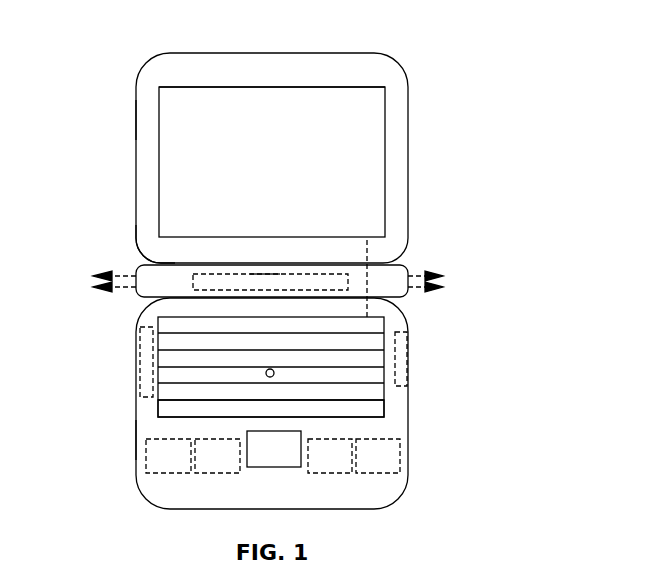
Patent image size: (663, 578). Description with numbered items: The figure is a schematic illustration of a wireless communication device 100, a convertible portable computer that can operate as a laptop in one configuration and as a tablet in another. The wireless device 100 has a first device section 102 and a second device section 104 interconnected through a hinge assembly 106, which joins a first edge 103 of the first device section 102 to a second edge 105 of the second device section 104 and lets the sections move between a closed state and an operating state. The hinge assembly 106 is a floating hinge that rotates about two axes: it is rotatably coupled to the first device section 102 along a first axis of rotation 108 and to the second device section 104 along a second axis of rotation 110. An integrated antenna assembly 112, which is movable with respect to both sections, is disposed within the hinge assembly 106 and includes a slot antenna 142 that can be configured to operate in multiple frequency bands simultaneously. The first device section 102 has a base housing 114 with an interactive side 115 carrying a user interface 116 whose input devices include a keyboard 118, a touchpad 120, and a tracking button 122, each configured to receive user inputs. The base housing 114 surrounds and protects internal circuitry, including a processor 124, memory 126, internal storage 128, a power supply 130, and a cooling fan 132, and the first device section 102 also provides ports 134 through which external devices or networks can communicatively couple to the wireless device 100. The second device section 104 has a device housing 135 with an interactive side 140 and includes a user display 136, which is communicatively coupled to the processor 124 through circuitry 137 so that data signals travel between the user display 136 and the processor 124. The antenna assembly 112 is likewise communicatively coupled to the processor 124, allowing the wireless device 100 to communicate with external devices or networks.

The wireless communication device 100 is at (465, 66).
The first device section 102 is at (417, 298).
The first edge 103 is at (178, 298).
The second device section 104 is at (417, 55).
The second edge 105 is at (162, 262).
The hinge assembly 106 is at (446, 266).
The first axis of rotation 108 is at (126, 292).
The second axis of rotation 110 is at (126, 270).
The antenna assembly 112 is at (262, 274).
The base housing 114 is at (137, 438).
The interactive side 115 is at (345, 343).
The user interface 116 is at (368, 355).
The keyboard 118 is at (367, 407).
The touchpad 120 is at (257, 459).
The tracking button 122 is at (266, 373).
The processor 124 is at (361, 466).
The memory 126 is at (313, 466).
The internal storage 128 is at (200, 466).
The power supply 130 is at (151, 466).
The cooling fan 132 is at (140, 338).
The ports 134 is at (400, 387).
The device housing 135 is at (136, 120).
The user display 136 is at (250, 108).
The circuitry 137 is at (368, 252).
The interactive side 140 is at (338, 108).
The slot antenna 142 is at (222, 282).